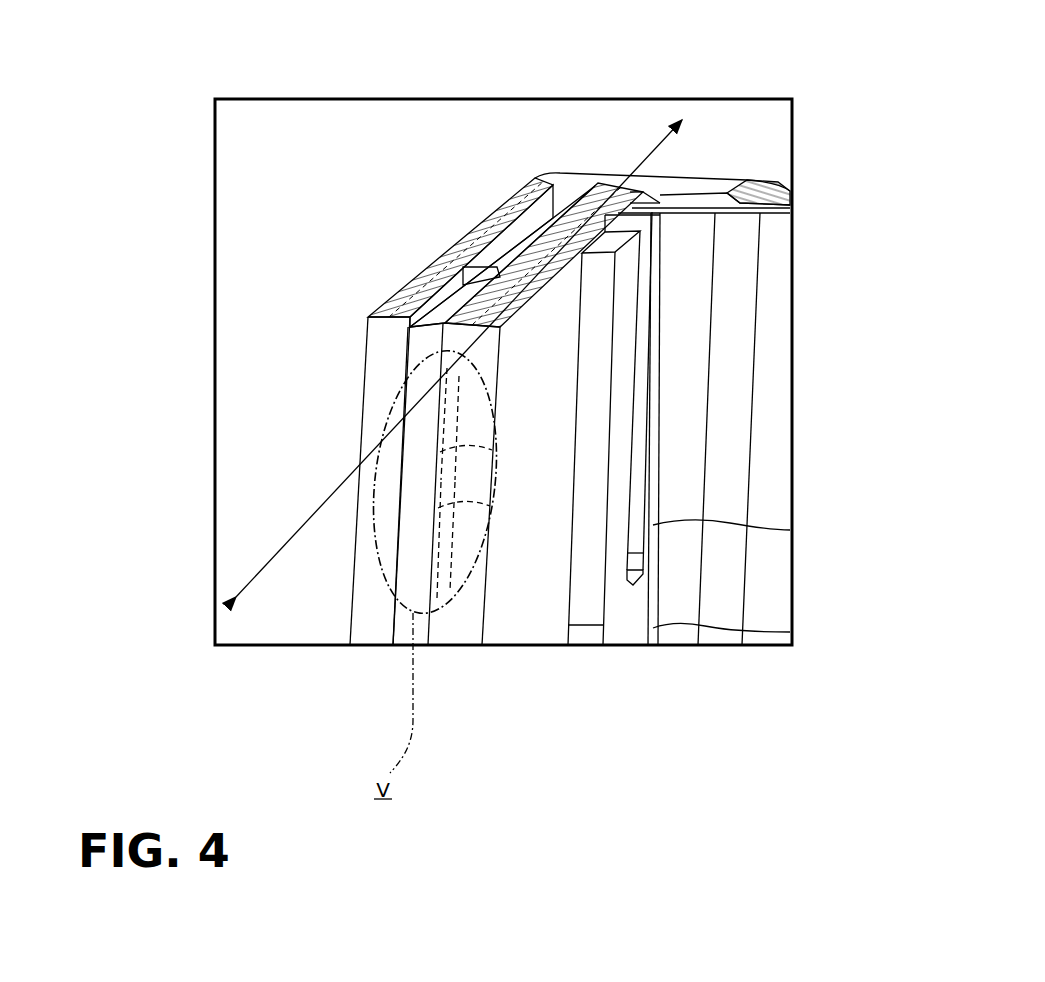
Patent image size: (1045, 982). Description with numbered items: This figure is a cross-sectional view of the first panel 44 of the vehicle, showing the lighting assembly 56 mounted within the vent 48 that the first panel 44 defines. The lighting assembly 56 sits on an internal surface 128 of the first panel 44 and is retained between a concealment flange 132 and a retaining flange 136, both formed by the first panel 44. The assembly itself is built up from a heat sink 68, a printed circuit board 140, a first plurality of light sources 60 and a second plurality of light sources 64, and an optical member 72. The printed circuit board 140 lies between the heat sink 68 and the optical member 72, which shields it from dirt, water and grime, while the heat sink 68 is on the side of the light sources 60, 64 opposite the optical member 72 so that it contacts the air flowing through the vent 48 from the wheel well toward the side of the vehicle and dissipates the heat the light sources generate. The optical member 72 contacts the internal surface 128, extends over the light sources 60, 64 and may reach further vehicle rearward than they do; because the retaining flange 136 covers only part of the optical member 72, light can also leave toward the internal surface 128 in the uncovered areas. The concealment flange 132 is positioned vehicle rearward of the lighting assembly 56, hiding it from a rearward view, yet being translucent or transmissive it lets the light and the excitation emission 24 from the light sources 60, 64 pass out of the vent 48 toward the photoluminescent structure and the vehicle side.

The excitation emission 24 is at (660, 138).
The first panel 44 is at (768, 170).
The vent 48 is at (338, 348).
The lighting assembly 56 is at (378, 615).
The first plurality of light sources 60 is at (498, 428).
The second plurality of light sources 64 is at (497, 528).
The heat sink 68 is at (388, 313).
The optical member 72 is at (547, 357).
The internal surface 128 is at (714, 416).
The concealment flange 132 is at (568, 188).
The retaining flange 136 is at (623, 298).
The printed circuit board 140 is at (422, 377).